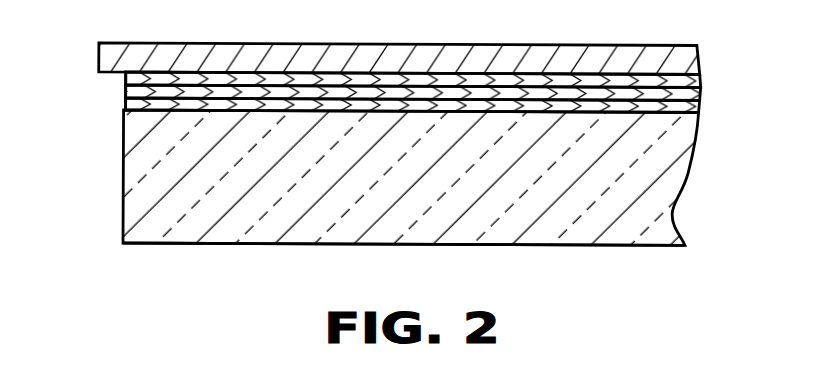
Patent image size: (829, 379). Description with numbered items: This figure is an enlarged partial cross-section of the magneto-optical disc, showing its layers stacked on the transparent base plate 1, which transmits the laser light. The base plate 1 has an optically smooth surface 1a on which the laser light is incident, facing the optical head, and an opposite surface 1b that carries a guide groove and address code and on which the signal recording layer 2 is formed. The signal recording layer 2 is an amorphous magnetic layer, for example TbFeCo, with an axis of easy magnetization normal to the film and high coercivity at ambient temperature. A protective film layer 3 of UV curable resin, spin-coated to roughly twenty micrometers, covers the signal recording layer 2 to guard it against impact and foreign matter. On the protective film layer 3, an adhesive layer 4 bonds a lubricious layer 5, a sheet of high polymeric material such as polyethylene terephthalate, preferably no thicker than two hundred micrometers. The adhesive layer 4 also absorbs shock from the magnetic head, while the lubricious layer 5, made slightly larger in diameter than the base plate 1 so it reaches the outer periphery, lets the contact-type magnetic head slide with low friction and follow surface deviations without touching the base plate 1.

The transparent base plate 1 is at (668, 192).
The optically smooth surface 1a is at (197, 244).
The opposite surface 1b is at (123, 98).
The signal recording layer 2 is at (698, 112).
The protective film layer 3 is at (697, 98).
The adhesive layer 4 is at (695, 80).
The lubricious layer 5 is at (693, 67).